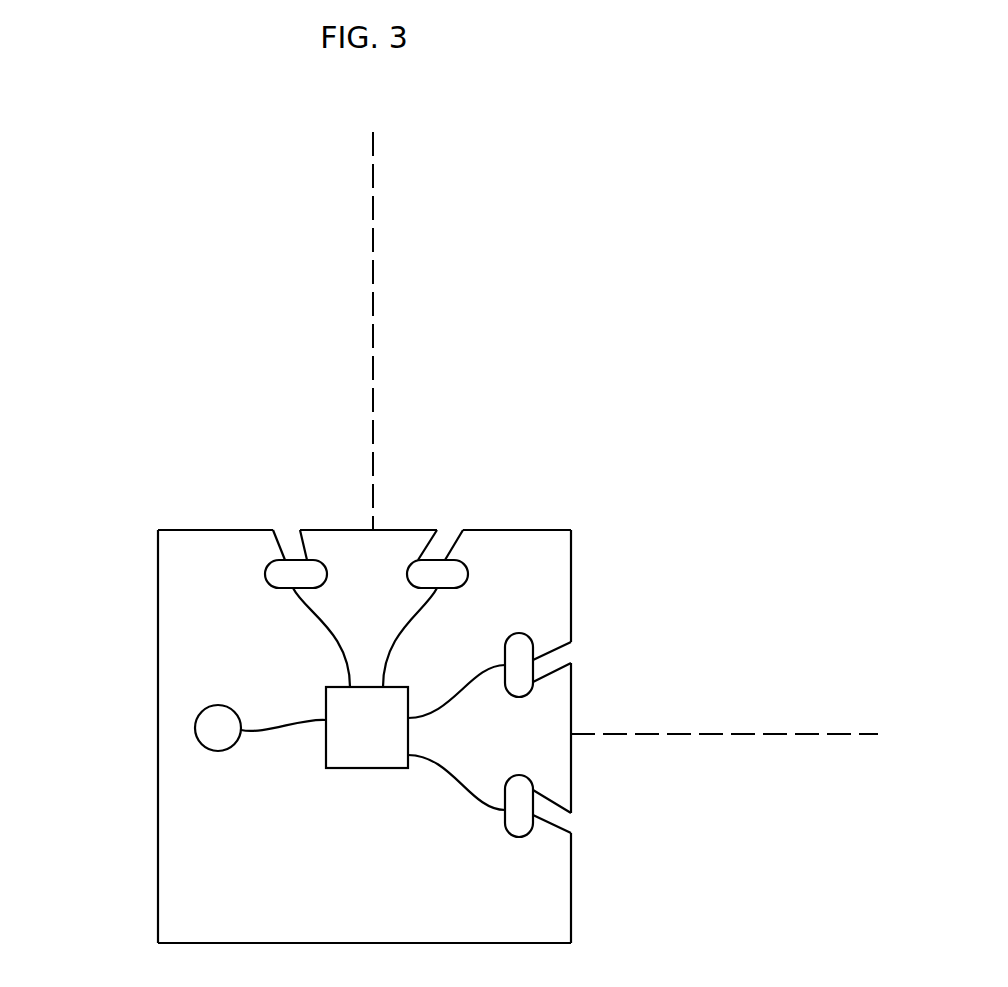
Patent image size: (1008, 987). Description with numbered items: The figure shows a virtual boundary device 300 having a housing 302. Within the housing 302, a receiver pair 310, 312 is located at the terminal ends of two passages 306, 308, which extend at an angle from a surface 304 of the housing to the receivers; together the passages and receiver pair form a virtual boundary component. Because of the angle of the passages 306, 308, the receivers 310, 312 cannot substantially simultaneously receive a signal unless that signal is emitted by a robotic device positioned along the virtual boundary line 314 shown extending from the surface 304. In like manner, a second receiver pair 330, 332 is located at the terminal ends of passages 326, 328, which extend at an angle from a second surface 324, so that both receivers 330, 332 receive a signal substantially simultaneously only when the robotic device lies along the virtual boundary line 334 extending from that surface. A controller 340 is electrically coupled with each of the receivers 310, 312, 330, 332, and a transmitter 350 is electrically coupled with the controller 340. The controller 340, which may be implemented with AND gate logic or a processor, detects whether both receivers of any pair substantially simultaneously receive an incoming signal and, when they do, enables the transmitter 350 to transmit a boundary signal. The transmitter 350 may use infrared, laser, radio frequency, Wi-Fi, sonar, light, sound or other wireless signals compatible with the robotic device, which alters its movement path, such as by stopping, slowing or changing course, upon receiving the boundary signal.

The virtual boundary device 300 is at (167, 528).
The housing 302 is at (158, 623).
The surface 304 is at (543, 530).
The passage 306 is at (290, 538).
The passage 308 is at (447, 540).
The receiver 310 is at (265, 574).
The receiver 312 is at (468, 569).
The virtual boundary line 314 is at (343, 331).
The surface 324 is at (571, 548).
The passage 326 is at (565, 652).
The passage 328 is at (563, 822).
The receiver 330 is at (523, 634).
The receiver 332 is at (520, 837).
The virtual boundary line 334 is at (724, 718).
The controller 340 is at (366, 768).
The transmitter 350 is at (218, 751).